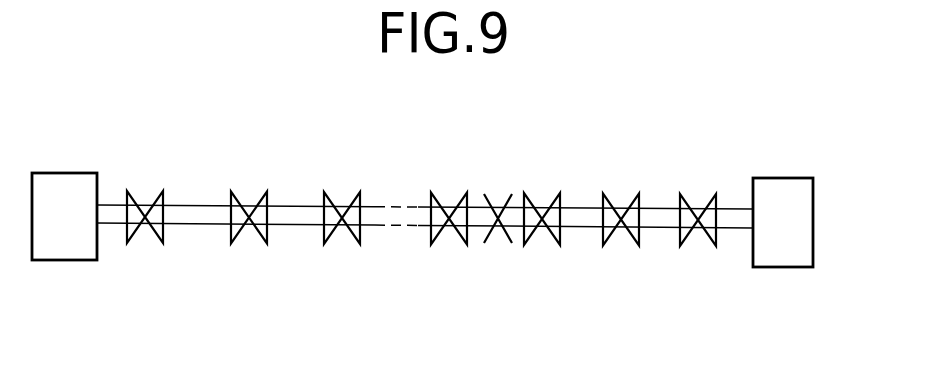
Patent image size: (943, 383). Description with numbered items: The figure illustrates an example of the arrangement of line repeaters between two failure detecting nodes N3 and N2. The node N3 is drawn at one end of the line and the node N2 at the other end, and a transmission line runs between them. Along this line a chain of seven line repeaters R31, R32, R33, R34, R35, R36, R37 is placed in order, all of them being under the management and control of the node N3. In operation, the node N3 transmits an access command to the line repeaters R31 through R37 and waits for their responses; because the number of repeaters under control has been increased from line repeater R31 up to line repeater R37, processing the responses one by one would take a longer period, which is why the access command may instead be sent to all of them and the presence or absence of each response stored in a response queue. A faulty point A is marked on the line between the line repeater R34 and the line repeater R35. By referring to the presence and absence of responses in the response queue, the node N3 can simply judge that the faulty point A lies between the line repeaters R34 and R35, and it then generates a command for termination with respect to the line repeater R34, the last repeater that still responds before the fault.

The failure detecting node N3 is at (77, 172).
The failure detecting node N2 is at (790, 177).
The line repeater R31 is at (162, 190).
The line repeater R32 is at (263, 191).
The line repeater R33 is at (358, 191).
The line repeater R34 is at (463, 191).
The line repeater R35 is at (558, 192).
The line repeater R36 is at (633, 192).
The line repeater R37 is at (710, 193).
The faulty point A is at (511, 172).